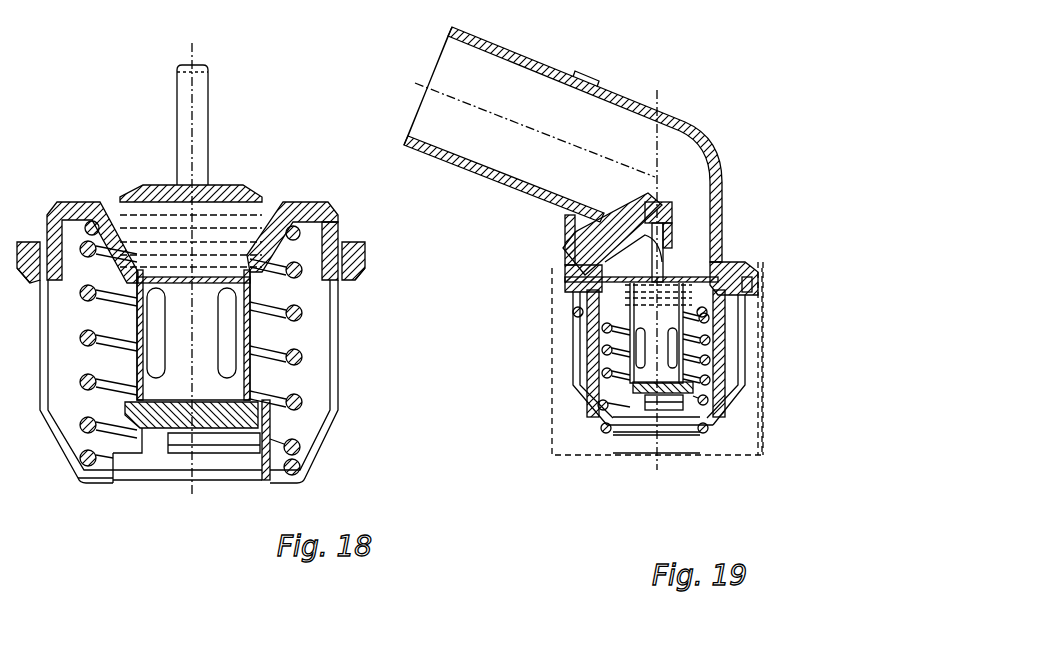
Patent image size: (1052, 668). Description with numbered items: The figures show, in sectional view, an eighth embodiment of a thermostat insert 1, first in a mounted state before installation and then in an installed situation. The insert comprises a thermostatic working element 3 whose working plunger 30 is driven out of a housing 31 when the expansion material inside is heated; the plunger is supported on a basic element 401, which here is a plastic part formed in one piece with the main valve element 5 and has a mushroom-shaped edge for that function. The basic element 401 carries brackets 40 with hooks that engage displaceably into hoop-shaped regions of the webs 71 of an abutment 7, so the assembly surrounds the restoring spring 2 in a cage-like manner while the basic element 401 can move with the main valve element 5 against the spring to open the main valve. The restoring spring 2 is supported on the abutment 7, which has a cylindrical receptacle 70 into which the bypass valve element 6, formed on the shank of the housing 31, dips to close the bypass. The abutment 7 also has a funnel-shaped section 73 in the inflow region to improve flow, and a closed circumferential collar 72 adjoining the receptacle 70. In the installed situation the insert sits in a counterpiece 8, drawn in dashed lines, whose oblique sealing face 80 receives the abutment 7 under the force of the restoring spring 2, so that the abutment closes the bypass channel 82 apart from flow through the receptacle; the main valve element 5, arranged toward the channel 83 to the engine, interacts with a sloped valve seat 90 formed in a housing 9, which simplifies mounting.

In FIG. 18, the thermostat insert 1 is at (107, 116).
In FIG. 18, the basic element 401 is at (145, 110).
In FIG. 18, the thermostatic working element 3 is at (277, 54).
In FIG. 18, the working plunger 30 is at (185, 108).
In FIG. 18, the housing 31 is at (200, 265).
In FIG. 18, the main valve element 5 is at (288, 213).
In FIG. 18, the restoring spring 2 is at (90, 222).
In FIG. 19, the restoring spring 2 is at (570, 330).
In FIG. 18, the brackets 40 is at (340, 233).
In FIG. 19, the brackets 40 is at (565, 268).
In FIG. 18, the webs 71 is at (340, 360).
In FIG. 19, the webs 71 is at (573, 365).
In FIG. 18, the funnel-shaped section 73 is at (313, 463).
In FIG. 18, the collar 72 is at (78, 483).
In FIG. 19, the collar 72 is at (705, 427).
In FIG. 18, the abutment 7 is at (110, 493).
In FIG. 18, the receptacle 70 is at (117, 483).
In FIG. 18, the bypass valve element 6 is at (213, 383).
In FIG. 19, the bypass valve element 6 is at (648, 397).
In FIG. 19, the housing 9 is at (613, 97).
In FIG. 19, the valve seat 90 is at (716, 262).
In FIG. 19, the channel to the engine 83 is at (570, 337).
In FIG. 19, the counterpiece 8 is at (553, 402).
In FIG. 19, the oblique sealing face 80 is at (587, 413).
In FIG. 19, the bypass channel 82 is at (675, 447).